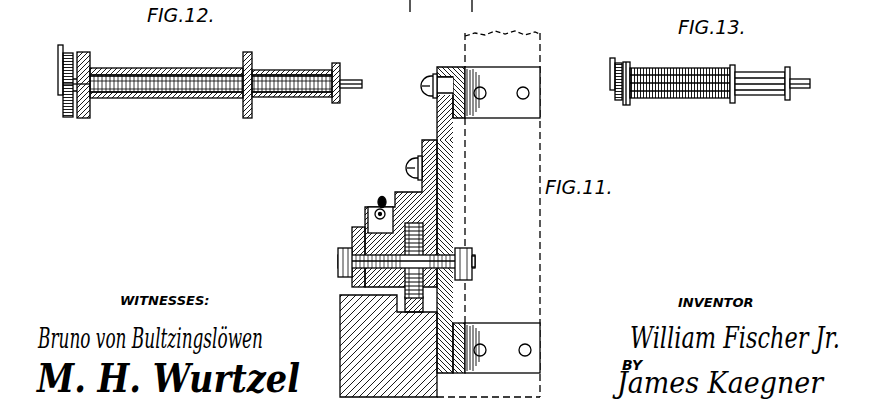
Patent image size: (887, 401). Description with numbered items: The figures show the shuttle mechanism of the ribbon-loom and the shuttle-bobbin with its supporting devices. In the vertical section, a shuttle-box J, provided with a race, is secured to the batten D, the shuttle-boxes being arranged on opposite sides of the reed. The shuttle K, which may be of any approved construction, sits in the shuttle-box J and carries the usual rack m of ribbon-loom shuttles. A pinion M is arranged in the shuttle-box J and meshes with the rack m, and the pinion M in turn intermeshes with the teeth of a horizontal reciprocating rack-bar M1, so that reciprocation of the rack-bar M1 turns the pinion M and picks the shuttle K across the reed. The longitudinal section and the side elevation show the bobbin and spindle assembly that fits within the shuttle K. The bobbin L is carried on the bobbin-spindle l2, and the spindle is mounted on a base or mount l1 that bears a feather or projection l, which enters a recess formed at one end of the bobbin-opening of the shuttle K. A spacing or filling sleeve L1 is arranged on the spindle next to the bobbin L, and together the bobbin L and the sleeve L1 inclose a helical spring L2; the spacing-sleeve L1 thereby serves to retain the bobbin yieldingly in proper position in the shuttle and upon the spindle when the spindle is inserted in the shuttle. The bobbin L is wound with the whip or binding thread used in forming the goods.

In FIG. 12, the feather or projection l is at (58, 50).
In FIG. 13, the feather or projection l is at (610, 67).
In FIG. 12, the base or mount of the bobbin-spindle l1 is at (71, 55).
In FIG. 13, the base or mount of the bobbin-spindle l1 is at (618, 101).
In FIG. 12, the bobbin L is at (194, 78).
In FIG. 13, the bobbin L is at (627, 69).
In FIG. 11, the bobbin L is at (378, 204).
In FIG. 12, the spacing or filling sleeve L1 is at (296, 72).
In FIG. 13, the spacing or filling sleeve L1 is at (784, 100).
In FIG. 12, the helical spring L2 is at (191, 99).
In FIG. 12, the bobbin-spindle l2 is at (346, 83).
In FIG. 13, the bobbin-spindle l2 is at (794, 86).
In FIG. 11, the batten D is at (455, 159).
In FIG. 11, the shuttle K is at (367, 213).
In FIG. 11, the shuttle-box J is at (352, 239).
In FIG. 11, the rack m is at (424, 222).
In FIG. 11, the pinion M is at (433, 243).
In FIG. 11, the rack-bar M1 is at (430, 322).